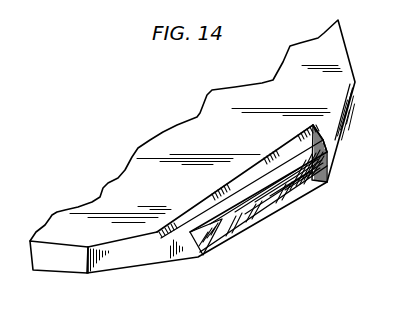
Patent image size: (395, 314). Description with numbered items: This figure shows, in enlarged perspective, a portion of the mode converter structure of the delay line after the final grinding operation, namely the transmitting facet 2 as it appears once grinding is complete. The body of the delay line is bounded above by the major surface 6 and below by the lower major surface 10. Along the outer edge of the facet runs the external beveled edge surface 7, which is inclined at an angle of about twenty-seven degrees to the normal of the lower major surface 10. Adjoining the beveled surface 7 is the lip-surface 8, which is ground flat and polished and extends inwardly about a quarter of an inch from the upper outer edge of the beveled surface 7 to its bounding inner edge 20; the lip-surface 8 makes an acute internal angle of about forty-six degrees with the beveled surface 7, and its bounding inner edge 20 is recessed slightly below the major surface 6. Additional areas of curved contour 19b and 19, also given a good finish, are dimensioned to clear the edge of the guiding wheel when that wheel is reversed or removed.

The transmitting facet 2 is at (290, 143).
The major surface 6 is at (80, 232).
The beveled edge surface 7 is at (250, 217).
The lip-surface 8 is at (203, 215).
The lower major surface 10 is at (103, 273).
The curved contour area 19 is at (330, 144).
The curved contour area 19b is at (200, 204).
The bounding inner edge 20 is at (260, 175).